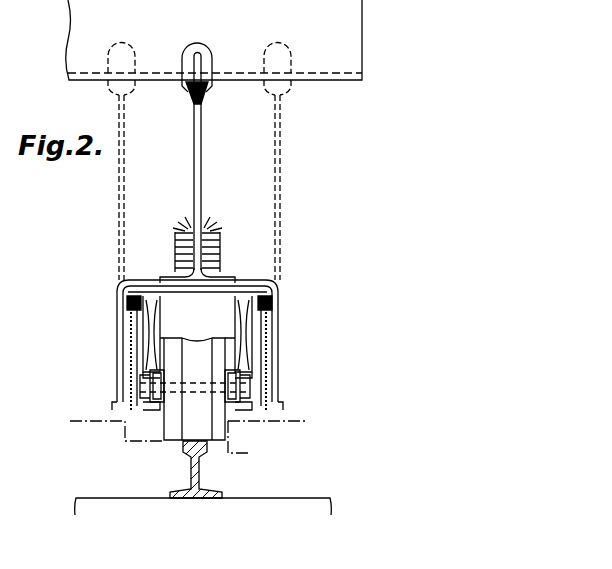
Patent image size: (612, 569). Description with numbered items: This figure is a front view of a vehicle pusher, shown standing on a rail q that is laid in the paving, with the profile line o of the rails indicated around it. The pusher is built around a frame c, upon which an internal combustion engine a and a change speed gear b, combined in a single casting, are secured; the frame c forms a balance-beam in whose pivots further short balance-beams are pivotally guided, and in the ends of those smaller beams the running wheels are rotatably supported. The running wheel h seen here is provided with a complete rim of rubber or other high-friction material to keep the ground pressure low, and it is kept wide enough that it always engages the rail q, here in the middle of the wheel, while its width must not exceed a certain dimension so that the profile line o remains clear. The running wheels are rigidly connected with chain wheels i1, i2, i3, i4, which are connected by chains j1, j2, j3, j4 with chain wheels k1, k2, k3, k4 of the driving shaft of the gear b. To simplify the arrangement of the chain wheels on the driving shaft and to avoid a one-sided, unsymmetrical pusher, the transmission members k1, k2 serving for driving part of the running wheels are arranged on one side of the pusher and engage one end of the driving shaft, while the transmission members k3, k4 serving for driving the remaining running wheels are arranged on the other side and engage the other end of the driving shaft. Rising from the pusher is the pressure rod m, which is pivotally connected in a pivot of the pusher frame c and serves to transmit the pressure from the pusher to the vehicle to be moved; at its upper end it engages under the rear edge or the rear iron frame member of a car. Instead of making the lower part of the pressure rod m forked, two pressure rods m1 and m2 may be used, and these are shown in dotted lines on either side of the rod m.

The pressure rod m is at (194, 176).
The pressure rod m1 is at (118, 185).
The pressure rod m2 is at (280, 185).
The internal combustion engine a is at (216, 246).
The change speed gear b is at (195, 296).
The chain wheel of the driving shaft k1 is at (127, 302).
The chain wheel of the driving shaft k2 is at (93, 354).
The chain wheel of the driving shaft k3 is at (278, 292).
The chain wheel of the driving shaft k4 is at (296, 354).
The chain j1 is at (128, 345).
The chain j2 is at (128, 352).
The chain j3 is at (266, 342).
The chain j4 is at (266, 350).
The chain wheel i1 is at (122, 388).
The chain wheel i2 is at (96, 404).
The chain wheel i3 is at (280, 387).
The chain wheel i4 is at (281, 393).
The running wheel h is at (190, 425).
The frame c is at (240, 405).
The profile line o is at (286, 421).
The rail q is at (200, 472).